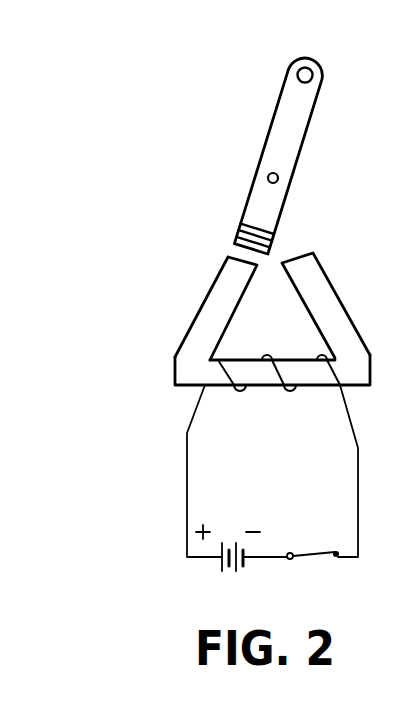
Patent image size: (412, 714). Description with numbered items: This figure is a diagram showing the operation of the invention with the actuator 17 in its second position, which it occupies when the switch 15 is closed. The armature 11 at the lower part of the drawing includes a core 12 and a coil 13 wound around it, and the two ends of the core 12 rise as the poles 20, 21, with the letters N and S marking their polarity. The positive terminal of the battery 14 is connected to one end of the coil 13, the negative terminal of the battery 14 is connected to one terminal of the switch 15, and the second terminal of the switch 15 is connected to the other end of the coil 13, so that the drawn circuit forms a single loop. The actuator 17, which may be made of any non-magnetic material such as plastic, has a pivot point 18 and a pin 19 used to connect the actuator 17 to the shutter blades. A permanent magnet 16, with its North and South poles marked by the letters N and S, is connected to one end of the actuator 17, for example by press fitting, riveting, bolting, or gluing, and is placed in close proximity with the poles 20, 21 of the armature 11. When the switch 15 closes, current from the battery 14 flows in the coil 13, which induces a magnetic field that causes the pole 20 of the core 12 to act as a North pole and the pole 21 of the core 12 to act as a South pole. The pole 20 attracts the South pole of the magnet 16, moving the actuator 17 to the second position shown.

The armature 11 is at (197, 315).
The core 12 is at (187, 343).
The coil 13 is at (290, 398).
The battery 14 is at (222, 550).
The switch 15 is at (319, 550).
The permanent magnet 16 is at (246, 230).
The actuator 17 is at (298, 122).
The pivot point 18 is at (279, 177).
The pin 19 is at (314, 75).
The pole 20 is at (233, 258).
The pole 21 is at (313, 254).